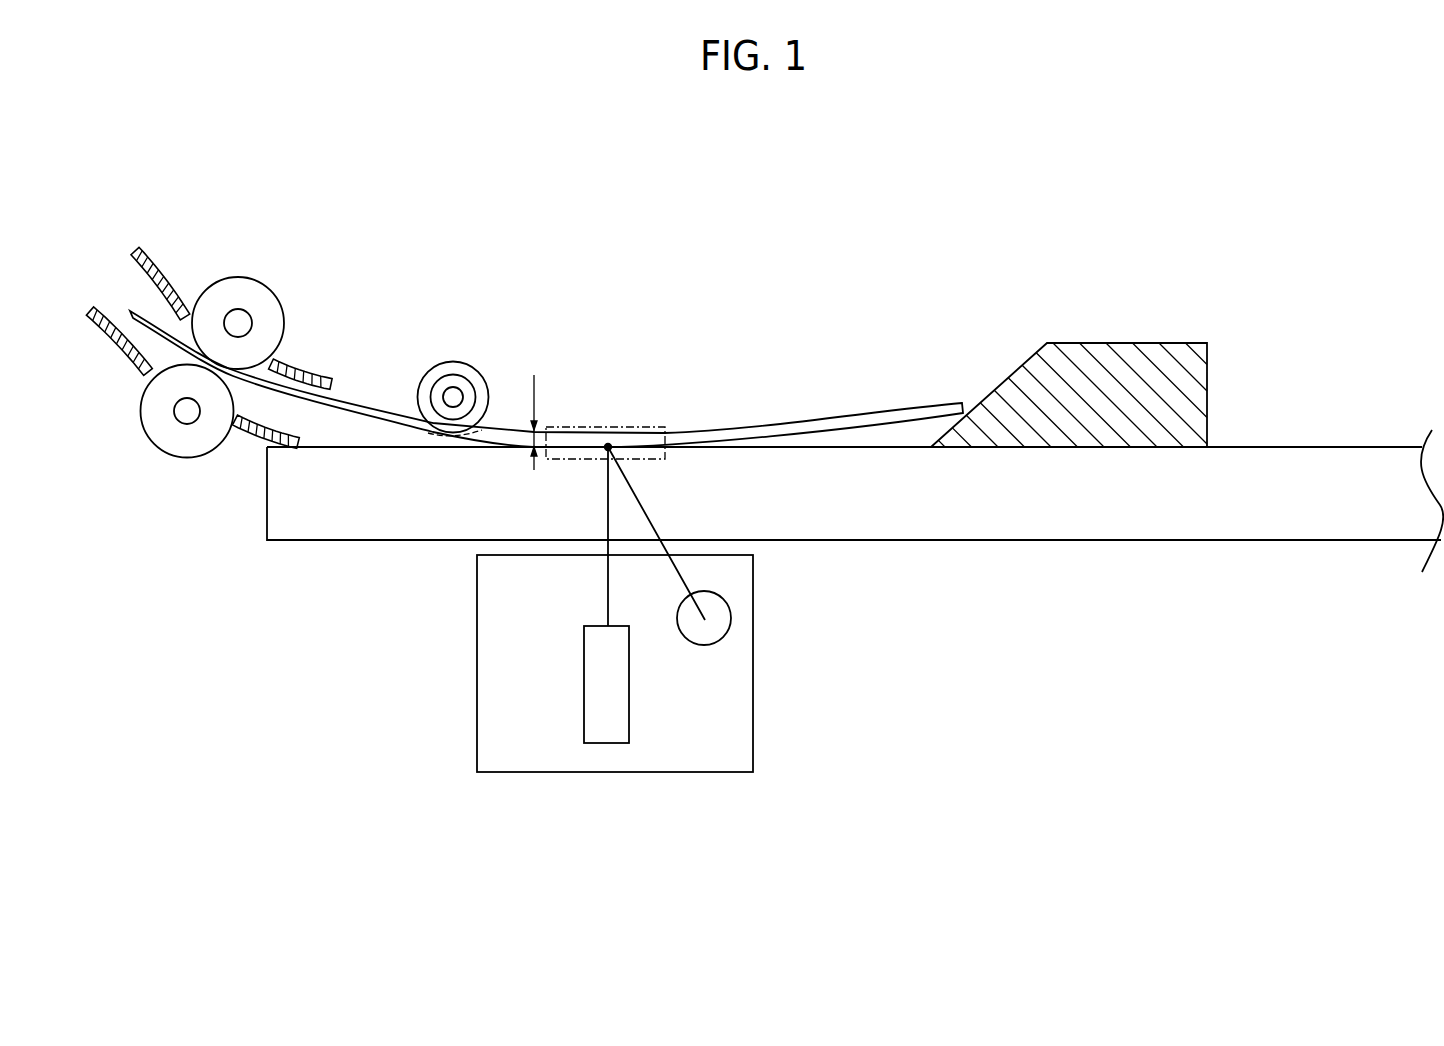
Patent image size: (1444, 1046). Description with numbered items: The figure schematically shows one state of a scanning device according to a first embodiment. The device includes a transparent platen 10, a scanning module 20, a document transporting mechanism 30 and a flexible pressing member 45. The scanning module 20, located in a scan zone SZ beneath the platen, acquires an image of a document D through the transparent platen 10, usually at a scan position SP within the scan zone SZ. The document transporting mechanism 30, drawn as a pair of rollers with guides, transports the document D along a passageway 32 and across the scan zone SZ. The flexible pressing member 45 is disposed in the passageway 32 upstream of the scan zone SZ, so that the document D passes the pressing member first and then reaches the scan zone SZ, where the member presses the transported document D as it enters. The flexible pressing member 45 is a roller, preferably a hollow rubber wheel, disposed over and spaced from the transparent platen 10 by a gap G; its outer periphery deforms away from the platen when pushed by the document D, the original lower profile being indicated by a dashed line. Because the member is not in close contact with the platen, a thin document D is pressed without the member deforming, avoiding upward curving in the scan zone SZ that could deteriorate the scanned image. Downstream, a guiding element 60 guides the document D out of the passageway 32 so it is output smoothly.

The transparent platen 10 is at (305, 529).
The scanning module 20 is at (480, 668).
The document transporting mechanism 30 is at (257, 302).
The passageway 32 is at (167, 323).
The flexible pressing member 45 is at (463, 362).
The guiding element 60 is at (1093, 360).
The document D is at (362, 407).
The scan position SP is at (609, 447).
The scan zone SZ is at (655, 423).
The gap G is at (547, 422).